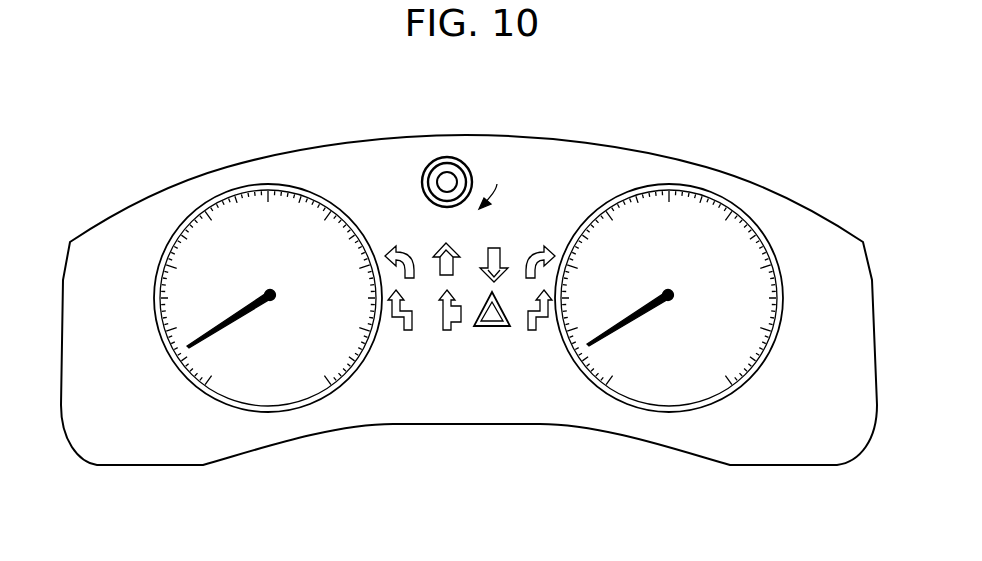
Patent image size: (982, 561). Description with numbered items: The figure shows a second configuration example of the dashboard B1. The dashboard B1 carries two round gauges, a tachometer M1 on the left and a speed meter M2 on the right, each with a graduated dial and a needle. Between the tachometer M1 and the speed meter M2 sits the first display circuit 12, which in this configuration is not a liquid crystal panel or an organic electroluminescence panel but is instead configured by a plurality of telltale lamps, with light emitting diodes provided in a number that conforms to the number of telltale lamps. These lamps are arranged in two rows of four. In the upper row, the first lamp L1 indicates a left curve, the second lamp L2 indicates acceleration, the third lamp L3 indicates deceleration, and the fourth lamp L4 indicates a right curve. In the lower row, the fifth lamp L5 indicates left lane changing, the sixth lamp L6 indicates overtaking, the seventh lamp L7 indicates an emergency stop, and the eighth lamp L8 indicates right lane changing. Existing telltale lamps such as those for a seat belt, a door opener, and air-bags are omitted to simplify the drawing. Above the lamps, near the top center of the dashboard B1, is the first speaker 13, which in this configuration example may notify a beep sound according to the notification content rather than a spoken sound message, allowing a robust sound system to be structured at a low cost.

The dashboard B1 is at (773, 190).
The tachometer M1 is at (318, 195).
The speed meter M2 is at (615, 195).
The first display circuit 12 is at (495, 186).
The first speaker 13 is at (421, 176).
The first lamp L1 is at (400, 246).
The second lamp L2 is at (450, 244).
The third lamp L3 is at (495, 247).
The fourth lamp L4 is at (540, 246).
The fifth lamp L5 is at (412, 330).
The sixth lamp L6 is at (447, 330).
The seventh lamp L7 is at (493, 327).
The eighth lamp L8 is at (532, 330).